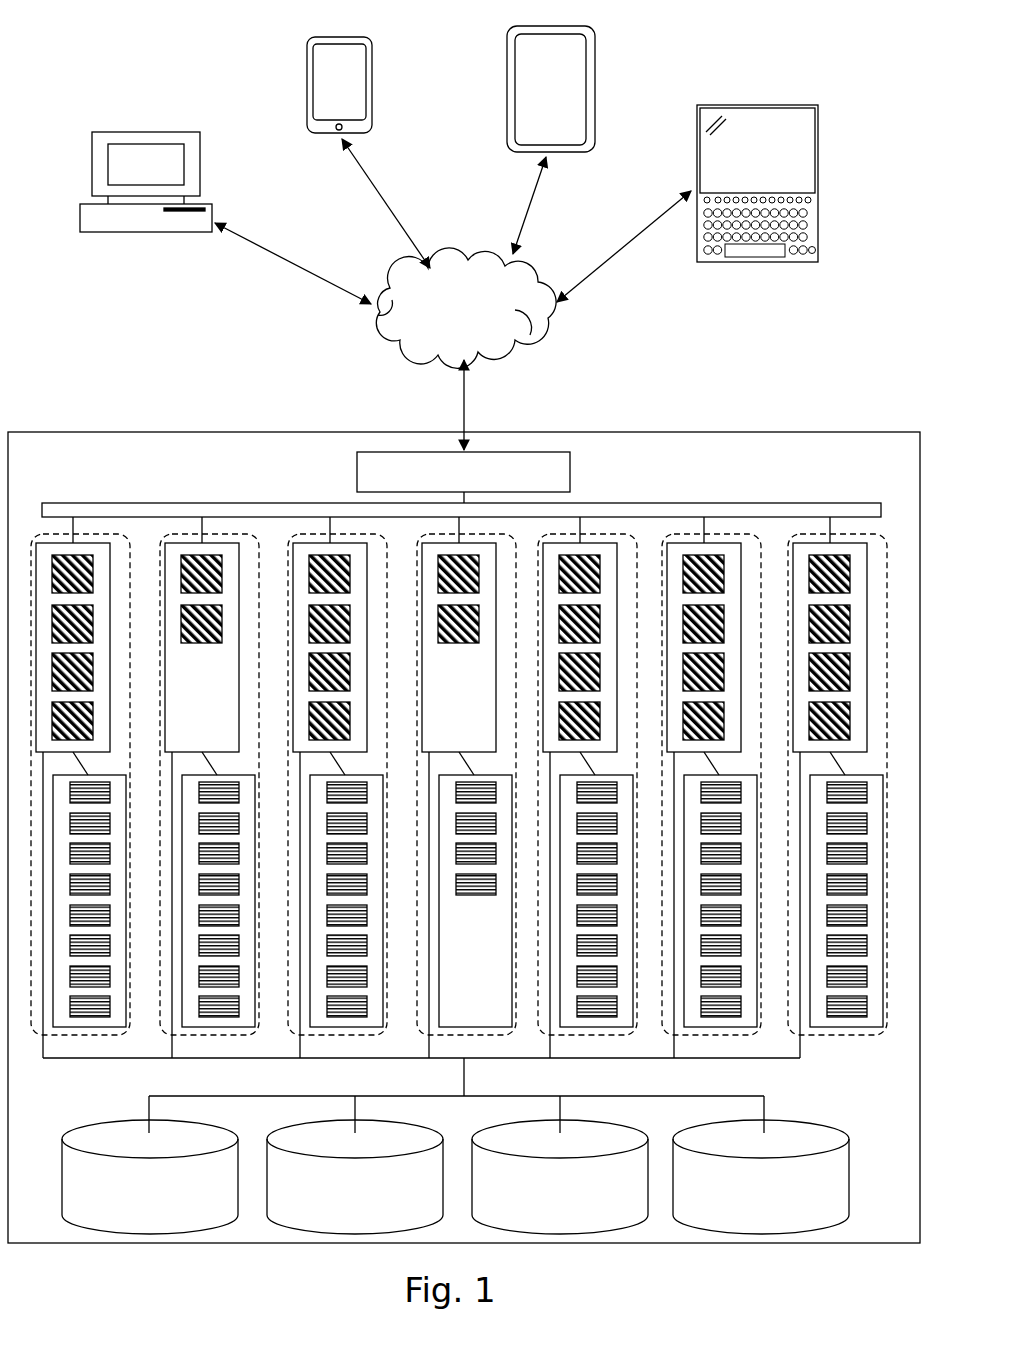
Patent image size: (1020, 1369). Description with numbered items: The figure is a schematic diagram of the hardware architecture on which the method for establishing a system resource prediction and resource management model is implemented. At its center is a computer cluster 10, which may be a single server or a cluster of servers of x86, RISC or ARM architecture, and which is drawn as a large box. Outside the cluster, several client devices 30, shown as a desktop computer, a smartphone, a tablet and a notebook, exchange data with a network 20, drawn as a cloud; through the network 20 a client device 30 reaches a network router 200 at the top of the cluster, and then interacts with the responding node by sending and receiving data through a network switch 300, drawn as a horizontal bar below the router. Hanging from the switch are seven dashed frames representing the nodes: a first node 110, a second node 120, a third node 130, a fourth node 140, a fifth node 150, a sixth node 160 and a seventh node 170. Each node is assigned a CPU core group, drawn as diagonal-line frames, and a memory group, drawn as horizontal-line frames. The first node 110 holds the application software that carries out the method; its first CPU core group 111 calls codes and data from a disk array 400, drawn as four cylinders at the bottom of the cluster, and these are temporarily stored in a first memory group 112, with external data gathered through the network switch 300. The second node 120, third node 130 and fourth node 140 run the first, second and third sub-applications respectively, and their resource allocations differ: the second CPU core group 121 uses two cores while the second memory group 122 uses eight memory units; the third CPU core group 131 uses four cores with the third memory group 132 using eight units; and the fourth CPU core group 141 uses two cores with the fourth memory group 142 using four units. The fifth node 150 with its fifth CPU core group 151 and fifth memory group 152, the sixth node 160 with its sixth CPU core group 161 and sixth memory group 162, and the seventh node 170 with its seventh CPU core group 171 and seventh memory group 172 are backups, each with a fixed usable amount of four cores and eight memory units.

The computer cluster 10 is at (720, 432).
The network 20 is at (449, 322).
The client device 30 is at (200, 170).
The network router 200 is at (545, 452).
The network switch 300 is at (735, 503).
The disk array 400 is at (785, 1137).
The first node 110 is at (35, 635).
The first CPU core group 111 is at (35, 717).
The first memory group 112 is at (52, 880).
The second node 120 is at (164, 635).
The second CPU core group 121 is at (164, 717).
The second memory group 122 is at (181, 880).
The third node 130 is at (292, 635).
The third CPU core group 131 is at (292, 717).
The third memory group 132 is at (309, 880).
The fourth node 140 is at (421, 635).
The fourth CPU core group 141 is at (421, 717).
The fourth memory group 142 is at (438, 880).
The fifth node 150 is at (542, 635).
The fifth CPU core group 151 is at (542, 717).
The fifth memory group 152 is at (559, 880).
The sixth node 160 is at (666, 635).
The sixth CPU core group 161 is at (666, 717).
The sixth memory group 162 is at (683, 880).
The seventh node 170 is at (792, 635).
The seventh CPU core group 171 is at (792, 717).
The seventh memory group 172 is at (809, 880).